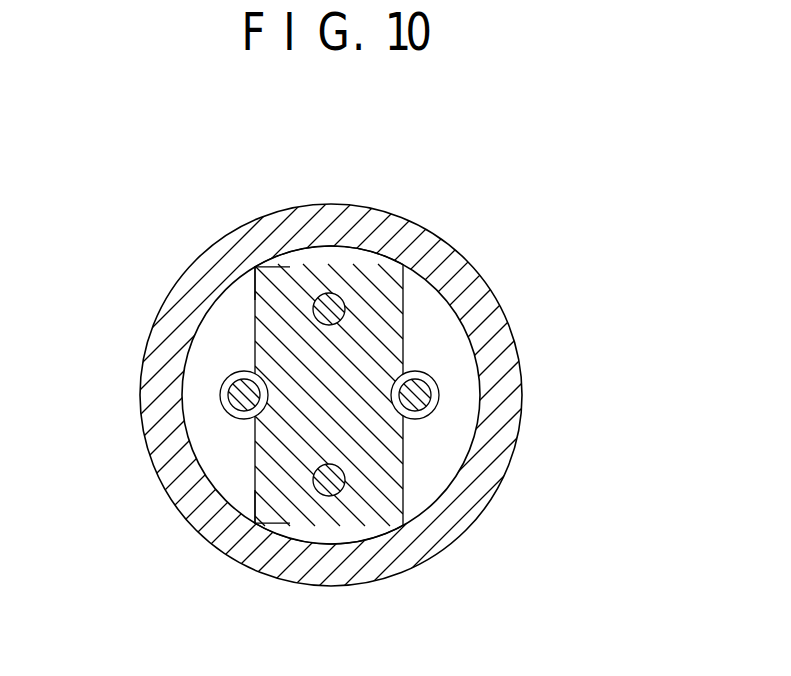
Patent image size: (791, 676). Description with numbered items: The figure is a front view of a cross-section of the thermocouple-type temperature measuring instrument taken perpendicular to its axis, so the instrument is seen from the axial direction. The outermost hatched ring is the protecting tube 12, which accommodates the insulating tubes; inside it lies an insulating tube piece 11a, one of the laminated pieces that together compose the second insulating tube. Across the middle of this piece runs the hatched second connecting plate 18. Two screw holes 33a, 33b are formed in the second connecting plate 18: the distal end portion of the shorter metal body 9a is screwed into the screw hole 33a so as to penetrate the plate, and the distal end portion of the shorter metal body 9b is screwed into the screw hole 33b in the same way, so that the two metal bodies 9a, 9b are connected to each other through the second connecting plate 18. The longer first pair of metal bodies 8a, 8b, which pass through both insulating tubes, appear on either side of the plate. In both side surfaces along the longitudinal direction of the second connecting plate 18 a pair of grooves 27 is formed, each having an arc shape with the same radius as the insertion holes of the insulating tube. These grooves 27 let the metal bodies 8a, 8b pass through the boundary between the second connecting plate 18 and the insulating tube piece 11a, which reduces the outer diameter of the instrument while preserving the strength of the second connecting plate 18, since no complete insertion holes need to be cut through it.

The protecting tube 12 is at (512, 330).
The insulating tube piece 11a is at (430, 480).
The second connecting plate 18 is at (255, 322).
The metal body 9a is at (253, 267).
The metal body 9b is at (255, 505).
The screw hole 33a is at (337, 298).
The screw hole 33b is at (338, 492).
The metal body 8a is at (438, 410).
The metal body 8b is at (226, 411).
The groove 27 is at (230, 417).